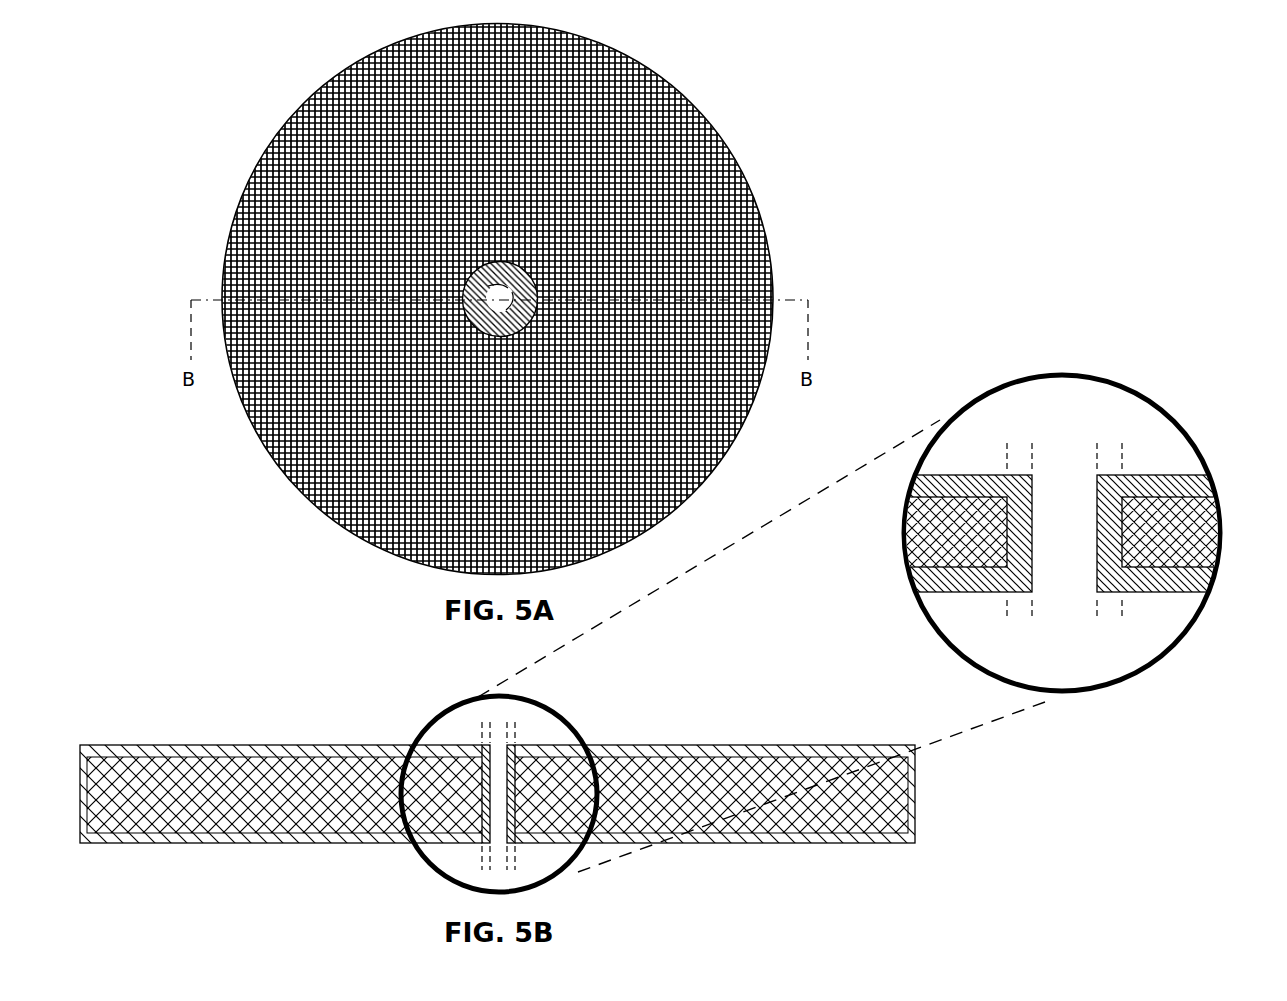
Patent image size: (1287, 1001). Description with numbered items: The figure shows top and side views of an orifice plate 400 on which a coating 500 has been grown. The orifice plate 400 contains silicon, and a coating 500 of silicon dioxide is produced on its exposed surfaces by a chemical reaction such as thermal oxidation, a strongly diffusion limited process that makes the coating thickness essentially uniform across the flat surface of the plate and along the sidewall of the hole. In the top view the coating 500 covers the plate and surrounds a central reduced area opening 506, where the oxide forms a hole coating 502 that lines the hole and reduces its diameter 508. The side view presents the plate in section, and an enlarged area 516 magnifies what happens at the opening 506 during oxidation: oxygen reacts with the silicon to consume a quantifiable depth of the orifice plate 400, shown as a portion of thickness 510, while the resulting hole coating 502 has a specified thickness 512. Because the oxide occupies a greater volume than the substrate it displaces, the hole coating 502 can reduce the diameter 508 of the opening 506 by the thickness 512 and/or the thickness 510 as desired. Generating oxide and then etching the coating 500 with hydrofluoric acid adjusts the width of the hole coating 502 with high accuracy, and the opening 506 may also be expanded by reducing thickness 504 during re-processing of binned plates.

In FIG. 5B, the orifice plate 400 is at (172, 751).
In FIG. 5A, the coating 500 is at (688, 92).
In FIG. 5B, the coating 500 is at (790, 745).
In FIG. 5A, the hole coating 502 is at (527, 272).
In FIG. 5A, the thickness 504 is at (498, 312).
In FIG. 5A, the opening 506 is at (488, 302).
In FIG. 5B, the diameter 508 is at (1032, 450).
In FIG. 5B, the thickness 510 is at (967, 476).
In FIG. 5B, the thickness 512 is at (1032, 608).
In FIG. 5B, the enlarged area 516 is at (432, 862).